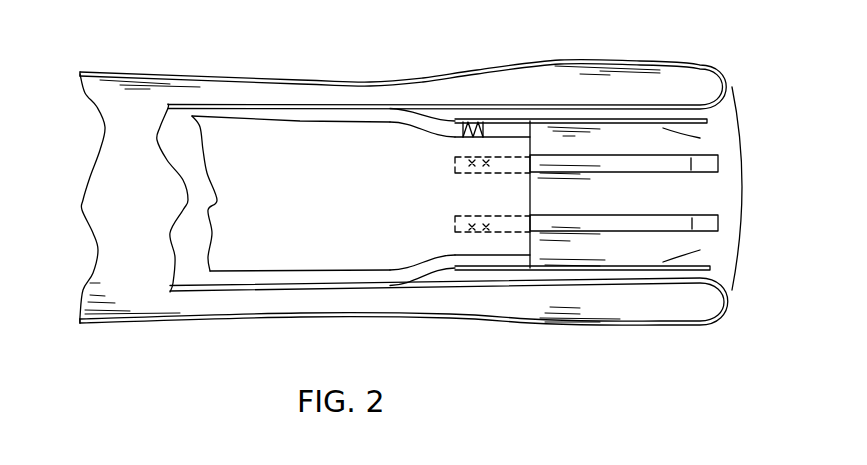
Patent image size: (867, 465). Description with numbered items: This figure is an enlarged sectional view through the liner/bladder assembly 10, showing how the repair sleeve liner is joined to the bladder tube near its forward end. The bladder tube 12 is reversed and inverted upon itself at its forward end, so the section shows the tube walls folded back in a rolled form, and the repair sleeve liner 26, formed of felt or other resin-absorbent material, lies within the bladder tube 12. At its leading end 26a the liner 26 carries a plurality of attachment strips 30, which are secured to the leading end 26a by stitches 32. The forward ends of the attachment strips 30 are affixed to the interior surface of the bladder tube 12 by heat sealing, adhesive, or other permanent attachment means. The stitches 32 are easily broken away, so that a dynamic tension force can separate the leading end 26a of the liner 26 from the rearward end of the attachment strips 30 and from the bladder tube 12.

The liner/bladder assembly 10 is at (134, 351).
The bladder tube 12 is at (208, 81).
The repair sleeve liner 26 is at (327, 248).
The leading end of liner 26a is at (517, 240).
The attachment strips 30 is at (658, 165).
The stitches 32 is at (465, 262).